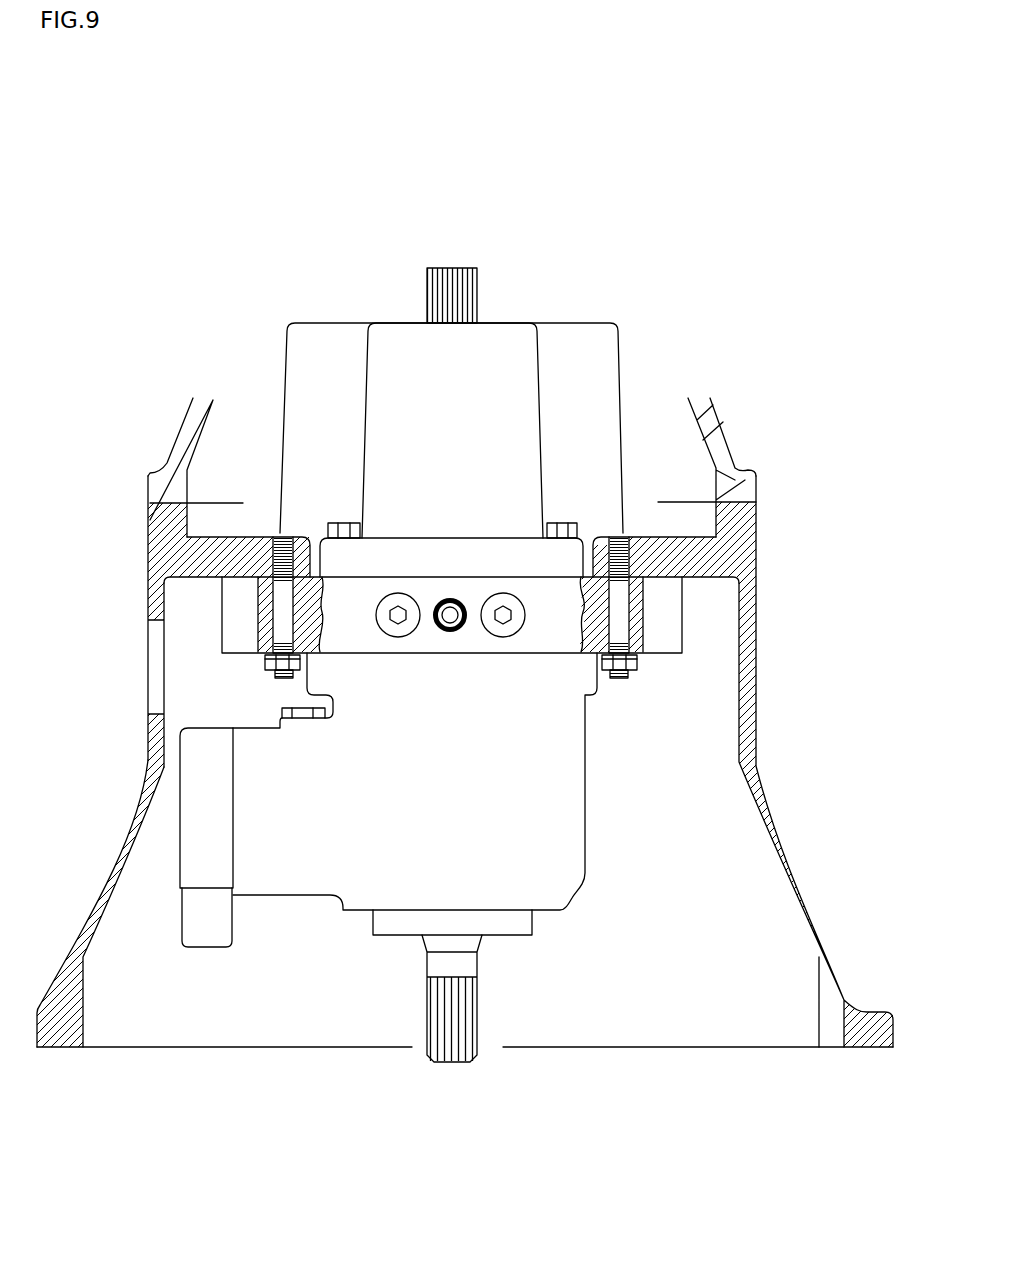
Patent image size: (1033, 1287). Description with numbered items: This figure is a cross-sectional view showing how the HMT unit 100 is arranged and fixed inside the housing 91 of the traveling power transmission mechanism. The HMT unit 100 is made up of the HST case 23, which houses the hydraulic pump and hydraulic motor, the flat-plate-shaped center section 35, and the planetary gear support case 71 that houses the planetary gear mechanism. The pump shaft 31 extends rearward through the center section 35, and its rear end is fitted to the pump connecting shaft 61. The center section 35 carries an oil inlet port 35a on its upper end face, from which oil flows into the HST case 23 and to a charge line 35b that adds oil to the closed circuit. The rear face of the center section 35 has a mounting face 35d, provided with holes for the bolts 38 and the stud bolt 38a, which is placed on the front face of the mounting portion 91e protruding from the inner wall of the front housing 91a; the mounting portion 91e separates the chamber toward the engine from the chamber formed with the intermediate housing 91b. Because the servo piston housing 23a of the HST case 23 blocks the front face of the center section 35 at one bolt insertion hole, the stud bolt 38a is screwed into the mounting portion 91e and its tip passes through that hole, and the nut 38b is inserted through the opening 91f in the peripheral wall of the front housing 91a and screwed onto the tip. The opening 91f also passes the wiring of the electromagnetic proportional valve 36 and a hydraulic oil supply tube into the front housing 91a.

The HMT unit 100 is at (482, 624).
The housing 91 is at (447, 749).
The front housing 91a is at (143, 772).
The intermediate housing 91b is at (177, 437).
The mounting portion 91e is at (700, 562).
The opening 91f is at (157, 707).
The planetary gear support case 71 is at (327, 362).
The pump connecting shaft 61 is at (456, 292).
The bolts 38 is at (622, 540).
The stud bolt 38a is at (246, 565).
The nut 38b is at (268, 663).
The center section 35 is at (533, 623).
The oil inlet port 35a is at (453, 637).
The charge line 35b is at (450, 642).
The mounting face 35d is at (650, 522).
The HST case 23 is at (459, 794).
The servo piston housing 23a is at (280, 714).
The electromagnetic proportional valve 36 is at (217, 842).
The pump shaft 31 is at (467, 988).